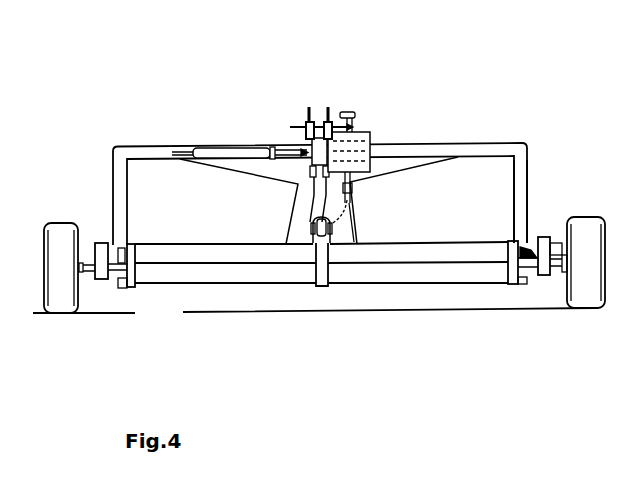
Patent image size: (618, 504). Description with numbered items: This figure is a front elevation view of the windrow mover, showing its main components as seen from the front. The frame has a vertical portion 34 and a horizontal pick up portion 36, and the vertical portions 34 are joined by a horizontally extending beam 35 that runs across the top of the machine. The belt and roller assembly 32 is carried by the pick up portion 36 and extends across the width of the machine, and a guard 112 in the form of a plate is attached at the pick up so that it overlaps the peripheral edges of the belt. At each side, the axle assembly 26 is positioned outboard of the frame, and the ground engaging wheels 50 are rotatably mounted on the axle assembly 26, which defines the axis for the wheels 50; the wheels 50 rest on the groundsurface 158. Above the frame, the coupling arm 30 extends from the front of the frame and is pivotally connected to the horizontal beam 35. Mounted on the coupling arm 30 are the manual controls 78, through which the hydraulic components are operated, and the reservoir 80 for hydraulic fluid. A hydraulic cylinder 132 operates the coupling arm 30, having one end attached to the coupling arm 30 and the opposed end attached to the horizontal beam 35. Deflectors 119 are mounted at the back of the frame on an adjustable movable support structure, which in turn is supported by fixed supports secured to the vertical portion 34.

The axle assembly 26 is at (100, 257).
The coupling arm 30 is at (312, 145).
The belt and roller assembly 32 is at (360, 275).
The vertical portion 34 is at (518, 190).
The horizontally extending beam 35 is at (427, 155).
The horizontal pick up portion 36 is at (525, 280).
The ground engaging wheels 50 is at (587, 298).
The manual controls 78 is at (307, 110).
The reservoir 80 is at (367, 135).
The guard 112 is at (322, 268).
The deflectors 119 is at (367, 197).
The hydraulic cylinder 132 is at (260, 150).
The groundsurface 158 is at (314, 306).